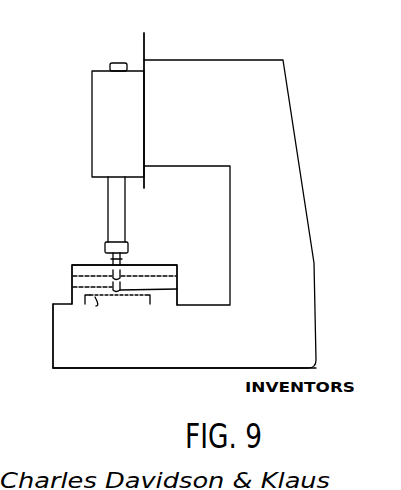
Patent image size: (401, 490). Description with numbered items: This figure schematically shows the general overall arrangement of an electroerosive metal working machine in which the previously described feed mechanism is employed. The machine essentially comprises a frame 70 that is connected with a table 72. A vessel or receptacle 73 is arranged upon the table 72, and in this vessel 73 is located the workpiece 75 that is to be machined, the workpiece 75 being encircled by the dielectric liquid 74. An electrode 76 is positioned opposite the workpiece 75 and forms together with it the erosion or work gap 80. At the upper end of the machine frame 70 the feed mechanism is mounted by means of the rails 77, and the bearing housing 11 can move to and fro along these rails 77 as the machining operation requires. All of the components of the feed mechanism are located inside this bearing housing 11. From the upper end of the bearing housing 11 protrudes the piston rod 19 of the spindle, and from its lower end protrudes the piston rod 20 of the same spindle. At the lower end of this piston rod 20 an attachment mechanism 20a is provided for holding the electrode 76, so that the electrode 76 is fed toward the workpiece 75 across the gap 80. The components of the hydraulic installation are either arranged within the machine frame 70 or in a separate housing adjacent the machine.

The bearing housing 11 is at (98, 104).
The piston rod 19 is at (118, 62).
The piston rod 20 is at (112, 206).
The attachment mechanism 20a is at (128, 246).
The frame 70 is at (290, 218).
The table 72 is at (50, 360).
The vessel 73 is at (73, 265).
The dielectric liquid 74 is at (72, 287).
The workpiece 75 is at (41, 315).
The electrode 76 is at (124, 262).
The rails 77 is at (150, 32).
The erosion gap 80 is at (120, 290).